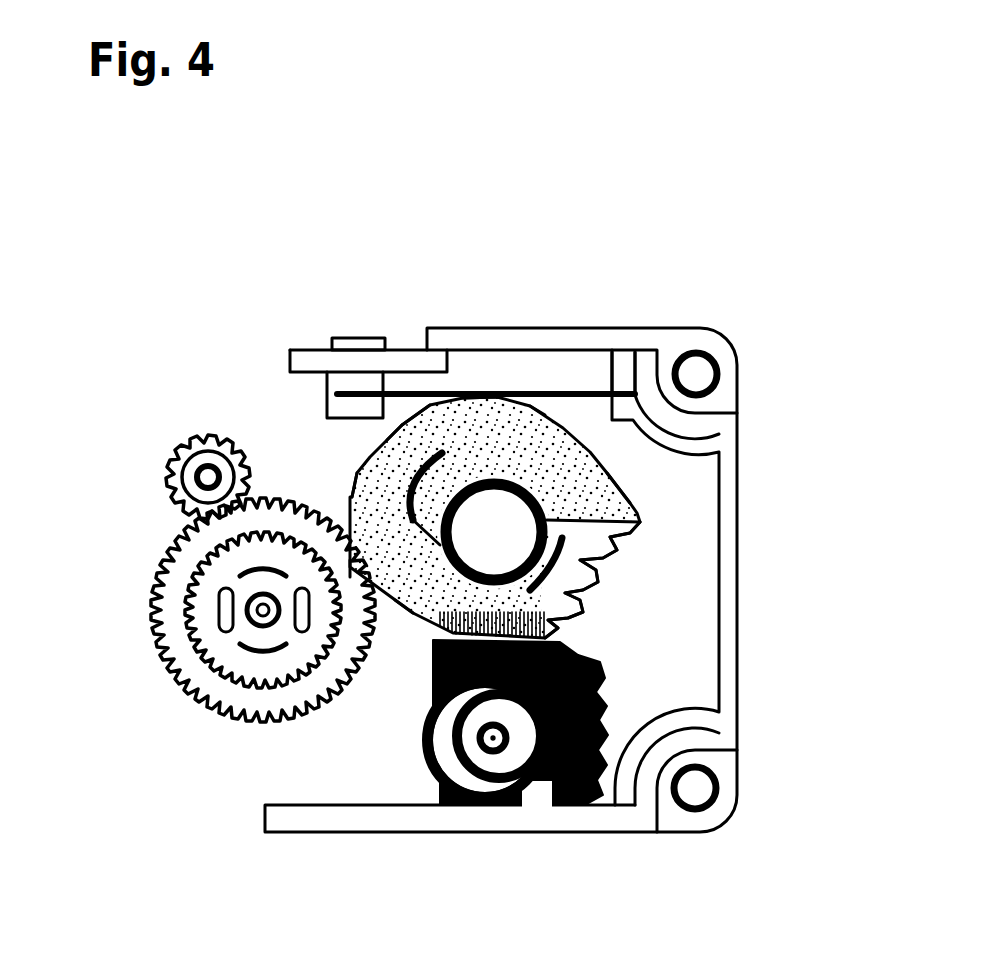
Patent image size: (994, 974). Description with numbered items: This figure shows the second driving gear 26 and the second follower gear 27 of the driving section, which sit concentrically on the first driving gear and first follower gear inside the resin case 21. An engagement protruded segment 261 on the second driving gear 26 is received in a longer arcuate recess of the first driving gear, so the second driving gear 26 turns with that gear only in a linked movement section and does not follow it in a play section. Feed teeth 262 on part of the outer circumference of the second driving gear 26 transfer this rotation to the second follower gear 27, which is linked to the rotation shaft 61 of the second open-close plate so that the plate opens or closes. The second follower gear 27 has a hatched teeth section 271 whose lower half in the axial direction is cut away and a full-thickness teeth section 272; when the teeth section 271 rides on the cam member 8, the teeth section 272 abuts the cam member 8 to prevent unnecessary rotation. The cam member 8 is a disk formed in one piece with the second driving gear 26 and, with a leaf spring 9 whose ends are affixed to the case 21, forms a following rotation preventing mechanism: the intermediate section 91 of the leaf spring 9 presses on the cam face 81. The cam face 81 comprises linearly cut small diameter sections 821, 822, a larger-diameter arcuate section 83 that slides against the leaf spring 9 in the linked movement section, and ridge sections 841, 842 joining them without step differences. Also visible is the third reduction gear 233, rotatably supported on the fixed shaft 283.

The cam member 8 is at (355, 478).
The cam face 81 is at (357, 453).
The arcuate section 83 is at (405, 425).
The ridge section 841 is at (488, 400).
The ridge section 842 is at (363, 560).
The small diameter section 821 is at (525, 412).
The small diameter section 822 is at (417, 600).
The leaf spring 9 is at (606, 392).
The intermediate section 91 is at (558, 385).
The case 21 is at (740, 484).
The second driving gear 26 is at (615, 485).
The engagement protruded segment 261 is at (392, 450).
The feed teeth 262 is at (612, 535).
The second follower gear 27 is at (600, 713).
The teeth section 271 is at (455, 773).
The teeth section 272 is at (585, 666).
The third reduction gear 233 is at (152, 580).
The fixed shaft 283 is at (242, 610).
The rotation shaft 61 is at (497, 736).